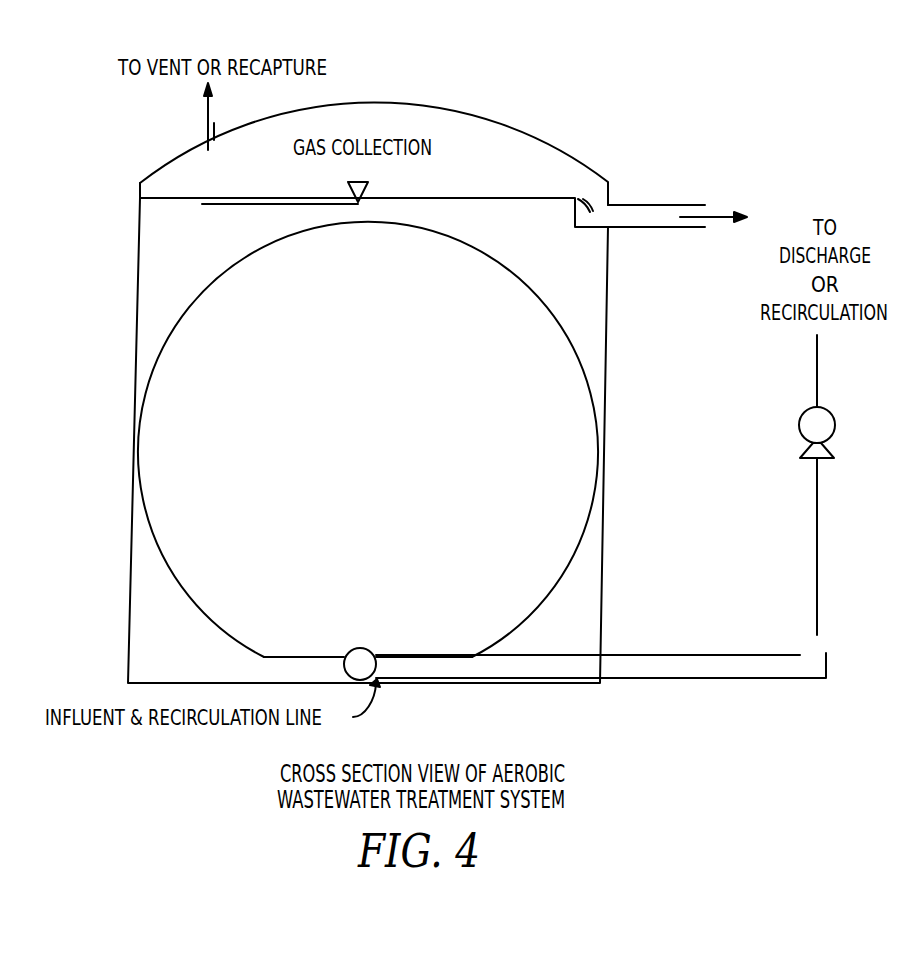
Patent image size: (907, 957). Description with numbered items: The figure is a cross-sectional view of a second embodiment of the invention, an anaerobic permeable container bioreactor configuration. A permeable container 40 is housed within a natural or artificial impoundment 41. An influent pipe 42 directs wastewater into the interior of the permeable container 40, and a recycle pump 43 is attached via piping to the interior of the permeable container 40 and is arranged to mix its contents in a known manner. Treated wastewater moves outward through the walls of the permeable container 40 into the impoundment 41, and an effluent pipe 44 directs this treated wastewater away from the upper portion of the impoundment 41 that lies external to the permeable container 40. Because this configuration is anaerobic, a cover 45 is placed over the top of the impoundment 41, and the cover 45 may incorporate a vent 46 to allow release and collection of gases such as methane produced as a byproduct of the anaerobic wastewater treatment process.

The permeable container 40 is at (540, 297).
The impoundment 41 is at (603, 408).
The influent pipe 42 is at (363, 648).
The recycle pump 43 is at (799, 427).
The effluent pipe 44 is at (723, 195).
The cover 45 is at (550, 142).
The vent 46 is at (203, 128).